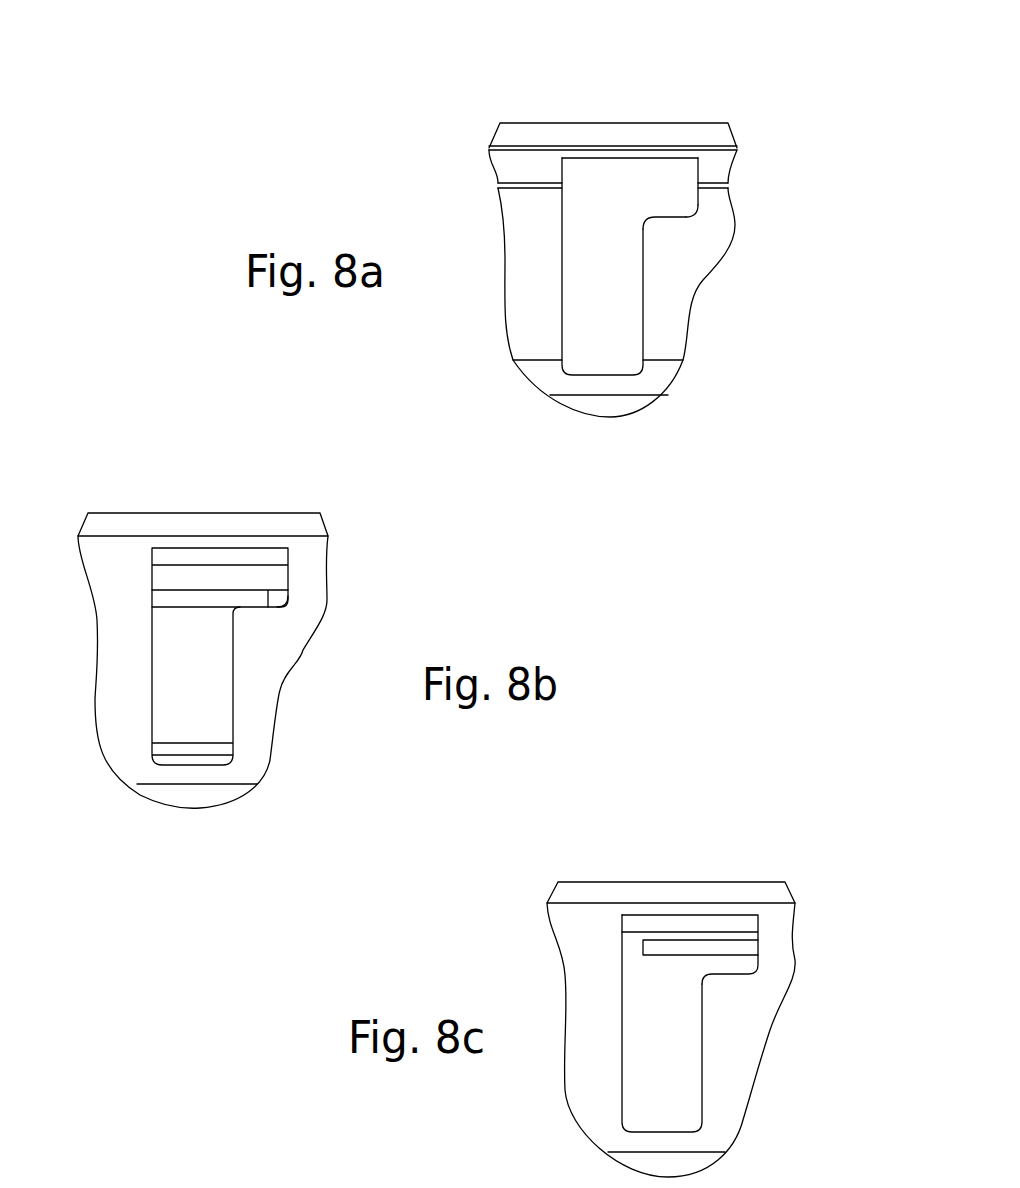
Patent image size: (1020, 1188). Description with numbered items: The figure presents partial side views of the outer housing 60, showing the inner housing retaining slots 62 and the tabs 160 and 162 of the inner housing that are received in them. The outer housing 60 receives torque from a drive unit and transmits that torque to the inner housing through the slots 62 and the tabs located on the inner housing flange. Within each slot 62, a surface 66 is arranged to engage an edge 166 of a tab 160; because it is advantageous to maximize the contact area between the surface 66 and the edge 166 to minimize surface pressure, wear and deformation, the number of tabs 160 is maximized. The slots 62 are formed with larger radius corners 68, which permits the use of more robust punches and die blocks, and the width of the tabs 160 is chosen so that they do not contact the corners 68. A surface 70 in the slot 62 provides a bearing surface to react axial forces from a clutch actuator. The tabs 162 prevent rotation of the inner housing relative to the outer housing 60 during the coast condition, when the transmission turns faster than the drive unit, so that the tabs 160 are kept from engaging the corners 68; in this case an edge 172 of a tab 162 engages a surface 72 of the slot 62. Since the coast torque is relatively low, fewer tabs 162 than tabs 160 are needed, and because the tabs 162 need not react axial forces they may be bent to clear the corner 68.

In FIG. 8A, the outer housing 60 is at (463, 92).
In FIG. 8B, the outer housing 60 is at (173, 442).
In FIG. 8C, the outer housing 60 is at (700, 853).
In FIG. 8A, the inner housing retaining slot 62 is at (612, 192).
In FIG. 8B, the inner housing retaining slot 62 is at (228, 578).
In FIG. 8C, the inner housing retaining slot 62 is at (633, 960).
In FIG. 8A, the surface 66 is at (562, 172).
In FIG. 8A, the corner 68 is at (693, 217).
In FIG. 8B, the corner 68 is at (283, 608).
In FIG. 8A, the surface 70 is at (667, 217).
In FIG. 8A, the surface 72 is at (697, 178).
In FIG. 8B, the tab 160 is at (178, 597).
In FIG. 8C, the tab 162 is at (683, 948).
In FIG. 8B, the edge 166 is at (150, 600).
In FIG. 8C, the edge 172 is at (758, 945).